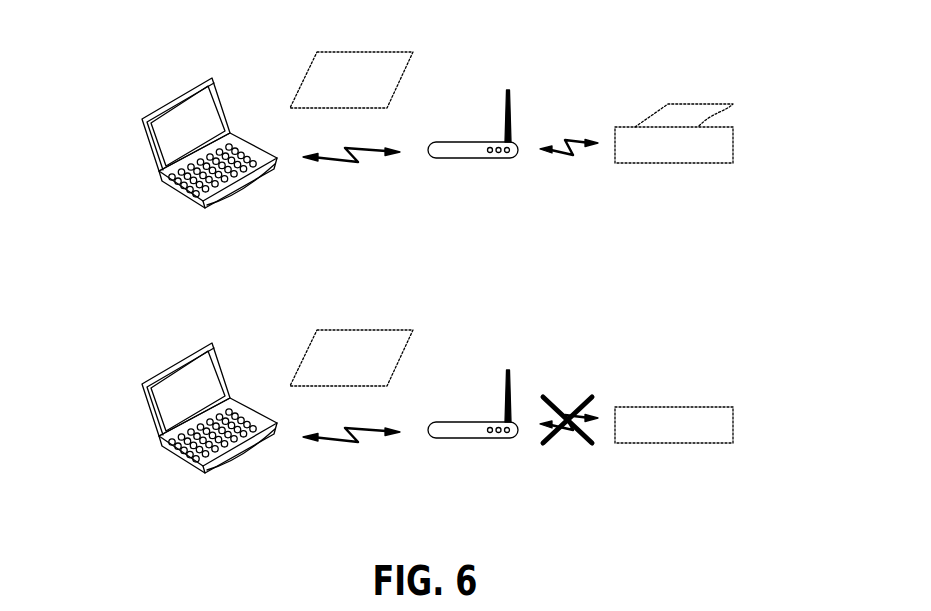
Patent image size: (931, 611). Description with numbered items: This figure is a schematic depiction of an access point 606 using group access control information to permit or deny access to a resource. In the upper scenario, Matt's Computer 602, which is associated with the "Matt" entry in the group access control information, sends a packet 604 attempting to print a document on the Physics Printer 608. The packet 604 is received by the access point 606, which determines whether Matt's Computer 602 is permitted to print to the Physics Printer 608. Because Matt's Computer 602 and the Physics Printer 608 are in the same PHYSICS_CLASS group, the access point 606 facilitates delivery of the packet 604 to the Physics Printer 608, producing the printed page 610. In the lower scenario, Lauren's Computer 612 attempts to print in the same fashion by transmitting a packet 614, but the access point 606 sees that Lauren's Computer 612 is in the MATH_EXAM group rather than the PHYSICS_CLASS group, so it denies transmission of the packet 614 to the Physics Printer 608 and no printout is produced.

The Matt's Computer 602 is at (140, 120).
The packet 604 is at (364, 151).
The access point 606 is at (490, 160).
The Physics Printer 608 is at (735, 140).
The printed page 610 is at (710, 104).
The Lauren's Computer 612 is at (140, 383).
The packet 614 is at (364, 429).